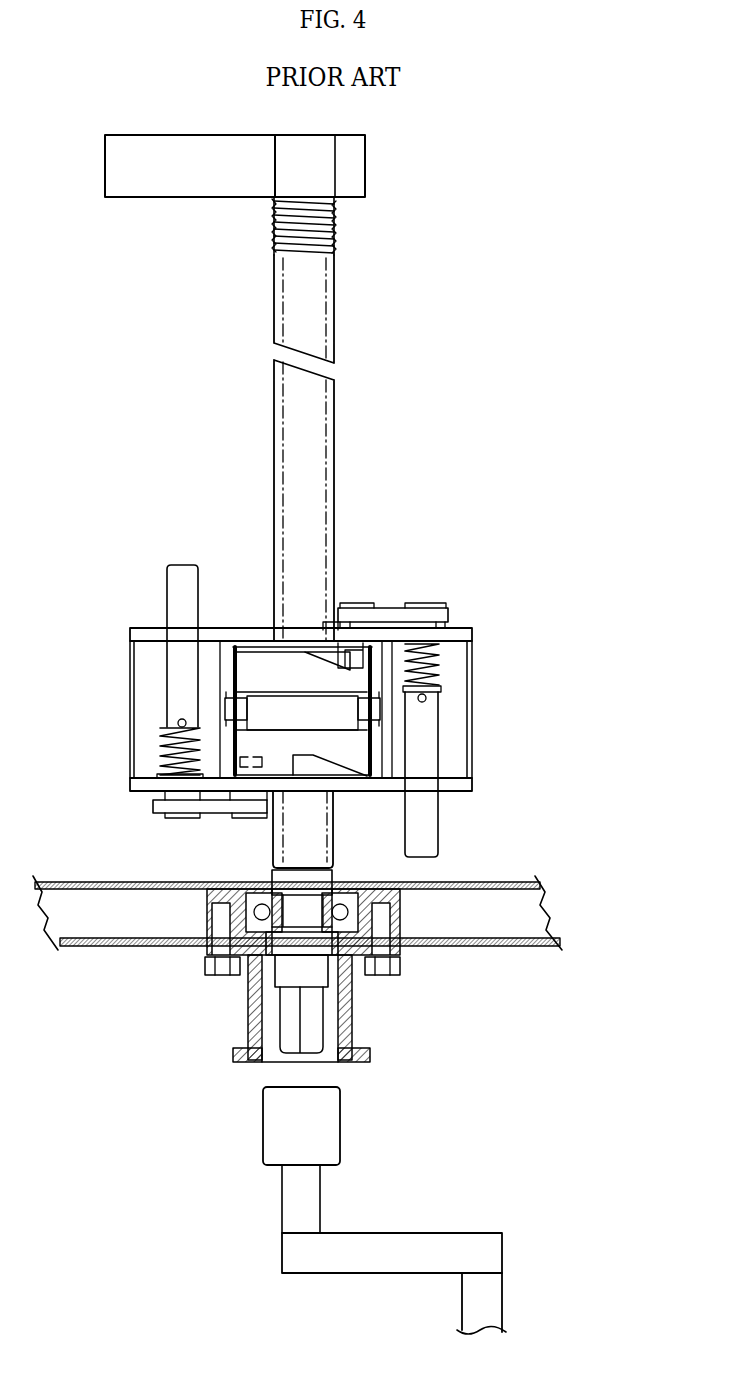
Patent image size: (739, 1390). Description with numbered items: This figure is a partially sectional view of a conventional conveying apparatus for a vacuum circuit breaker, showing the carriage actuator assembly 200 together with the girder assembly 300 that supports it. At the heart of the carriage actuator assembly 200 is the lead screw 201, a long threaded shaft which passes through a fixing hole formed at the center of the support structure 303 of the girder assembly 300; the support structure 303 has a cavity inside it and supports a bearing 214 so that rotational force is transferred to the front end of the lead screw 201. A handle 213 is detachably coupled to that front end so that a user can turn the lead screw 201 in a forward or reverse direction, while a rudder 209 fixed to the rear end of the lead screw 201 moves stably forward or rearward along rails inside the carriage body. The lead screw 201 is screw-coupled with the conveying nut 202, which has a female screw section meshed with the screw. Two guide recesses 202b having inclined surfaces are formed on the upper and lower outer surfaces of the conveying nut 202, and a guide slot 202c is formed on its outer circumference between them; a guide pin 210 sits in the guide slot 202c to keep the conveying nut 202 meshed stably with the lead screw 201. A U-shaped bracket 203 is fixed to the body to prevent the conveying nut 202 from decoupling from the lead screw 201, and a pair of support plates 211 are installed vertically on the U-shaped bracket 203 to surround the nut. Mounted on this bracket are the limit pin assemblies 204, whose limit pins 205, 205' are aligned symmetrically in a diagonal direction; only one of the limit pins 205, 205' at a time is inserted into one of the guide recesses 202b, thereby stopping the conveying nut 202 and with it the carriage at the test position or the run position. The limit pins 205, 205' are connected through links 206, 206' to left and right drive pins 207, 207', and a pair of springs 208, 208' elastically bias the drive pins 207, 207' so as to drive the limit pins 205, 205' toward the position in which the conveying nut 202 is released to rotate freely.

The carriage actuator assembly 200 is at (444, 452).
The lead screw 201 is at (320, 408).
The conveying nut 202 is at (307, 652).
The guide recesses 202b is at (335, 625).
The guide slot 202c is at (267, 708).
The U-shaped bracket 203 is at (458, 632).
The limit pin assemblies 204 is at (409, 597).
The limit pin 205 is at (197, 818).
The limit pin 205' is at (372, 602).
The link 206 is at (178, 819).
The link 206' is at (422, 585).
The drive pin 207 is at (125, 646).
The drive pin 207' is at (477, 774).
The spring 208 is at (124, 754).
The spring 208' is at (479, 672).
The rudder 209 is at (172, 198).
The guide pin 210 is at (233, 704).
The support plates 211 is at (228, 686).
The handle 213 is at (381, 980).
The bearing 214 is at (282, 1178).
The girder assembly 300 is at (537, 968).
The support structure 303 is at (463, 950).